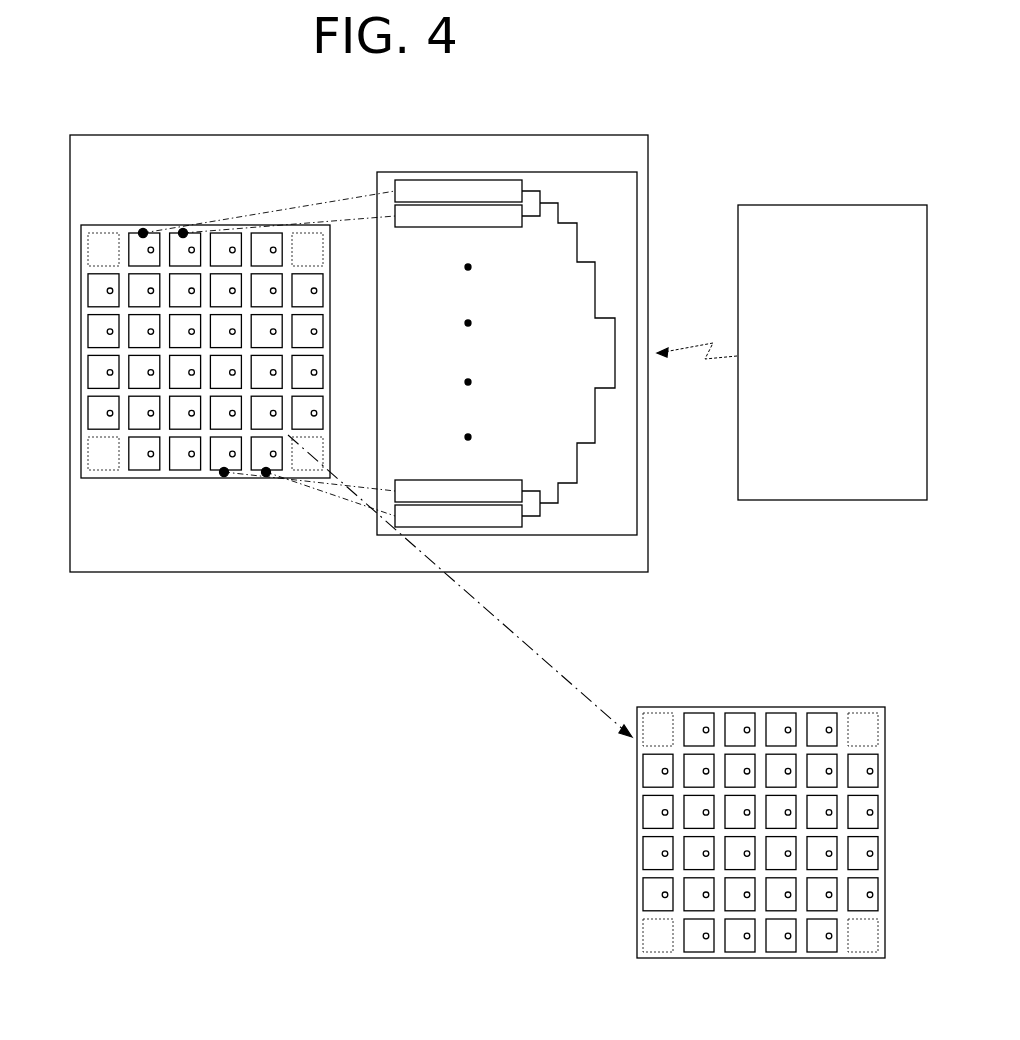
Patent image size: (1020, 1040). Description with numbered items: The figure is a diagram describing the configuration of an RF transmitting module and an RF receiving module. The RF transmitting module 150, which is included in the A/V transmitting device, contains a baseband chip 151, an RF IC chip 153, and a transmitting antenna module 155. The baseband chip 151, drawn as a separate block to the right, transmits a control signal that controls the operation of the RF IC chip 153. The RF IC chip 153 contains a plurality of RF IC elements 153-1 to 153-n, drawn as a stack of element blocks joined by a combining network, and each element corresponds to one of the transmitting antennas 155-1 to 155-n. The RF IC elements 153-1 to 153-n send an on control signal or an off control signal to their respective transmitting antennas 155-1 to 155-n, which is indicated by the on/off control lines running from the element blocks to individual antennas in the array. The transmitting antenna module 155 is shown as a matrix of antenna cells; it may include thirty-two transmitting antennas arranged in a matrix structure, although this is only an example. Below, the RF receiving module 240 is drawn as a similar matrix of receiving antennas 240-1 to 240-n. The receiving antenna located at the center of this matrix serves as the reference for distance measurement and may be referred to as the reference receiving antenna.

The RF transmitting module 150 is at (68, 76).
The baseband chip 151 is at (831, 205).
The RF IC chip 153 is at (507, 350).
The RF IC element 153-1 is at (455, 180).
The RF IC element 153-n is at (518, 528).
The transmitting antenna module 155 is at (172, 380).
The transmitting antenna 155-1 is at (135, 240).
The transmitting antenna 155-n is at (253, 480).
The RF receiving module 240 is at (724, 840).
The receiving antenna 240-1 is at (697, 713).
The receiving antenna 240-n is at (650, 851).